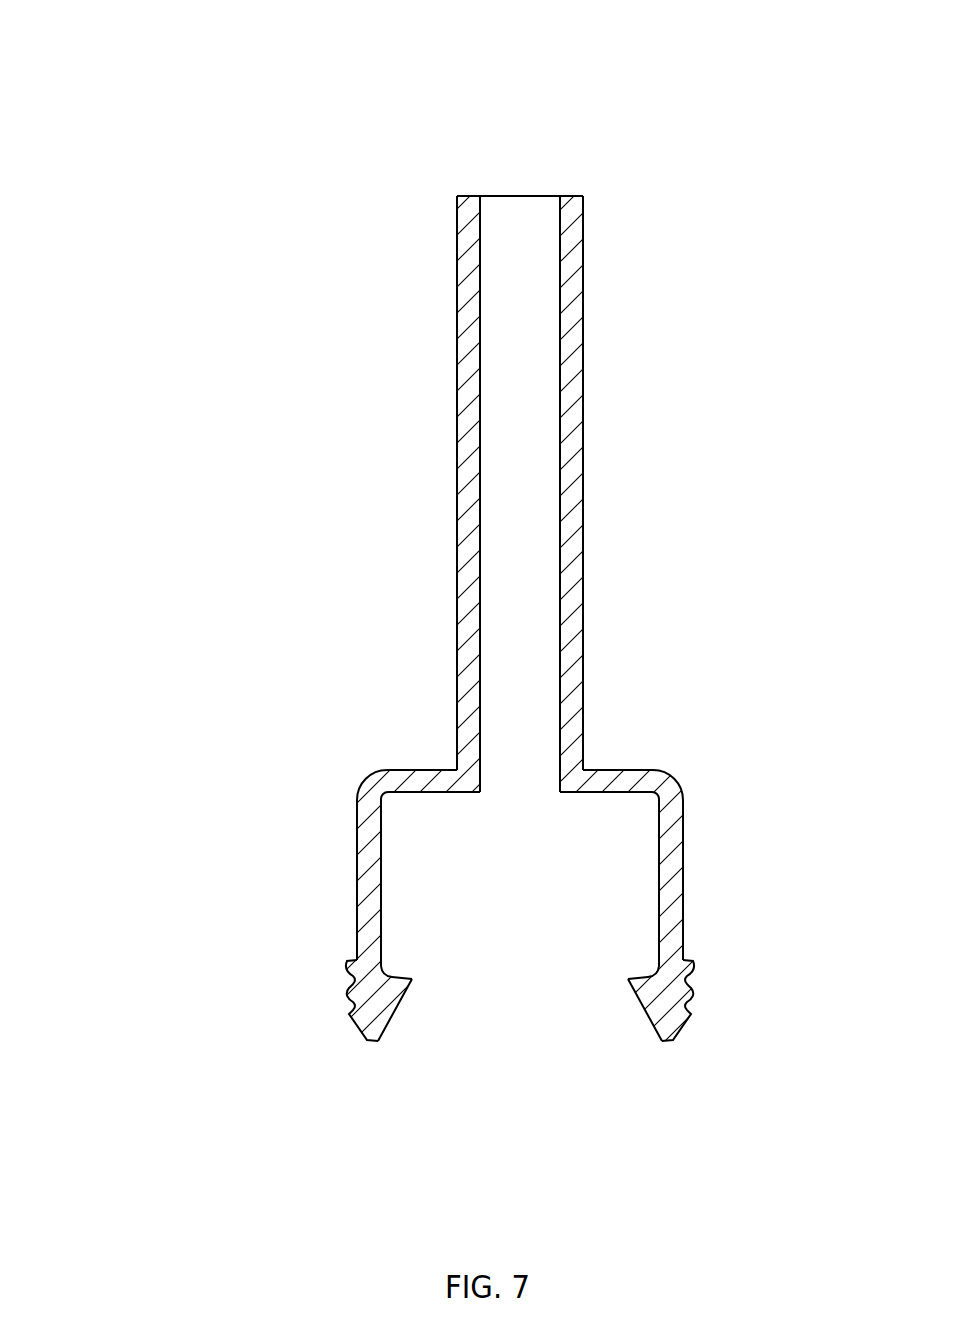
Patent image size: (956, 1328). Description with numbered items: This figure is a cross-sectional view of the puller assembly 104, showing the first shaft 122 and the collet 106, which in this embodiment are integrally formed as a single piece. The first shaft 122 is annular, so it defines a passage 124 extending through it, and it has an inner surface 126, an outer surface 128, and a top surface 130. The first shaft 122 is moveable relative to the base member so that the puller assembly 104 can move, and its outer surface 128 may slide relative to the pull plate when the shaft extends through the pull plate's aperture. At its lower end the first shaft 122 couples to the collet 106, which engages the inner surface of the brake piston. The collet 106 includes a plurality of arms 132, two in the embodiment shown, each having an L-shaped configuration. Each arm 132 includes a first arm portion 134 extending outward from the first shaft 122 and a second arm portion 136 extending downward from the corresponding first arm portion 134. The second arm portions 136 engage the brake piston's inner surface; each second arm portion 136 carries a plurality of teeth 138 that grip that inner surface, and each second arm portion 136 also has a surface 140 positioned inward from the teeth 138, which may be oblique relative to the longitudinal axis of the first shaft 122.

The puller assembly 104 is at (148, 106).
The collet 106 is at (279, 785).
The first shaft 122 is at (604, 450).
The passage 124 is at (524, 238).
The inner surface 126 is at (480, 465).
The outer surface 128 is at (583, 594).
The top surface 130 is at (468, 196).
The arms 132 is at (306, 866).
The first arm portion 134 is at (418, 782).
The second arm portion 136 is at (358, 883).
The teeth 138 is at (348, 975).
The surface 140 is at (397, 1018).